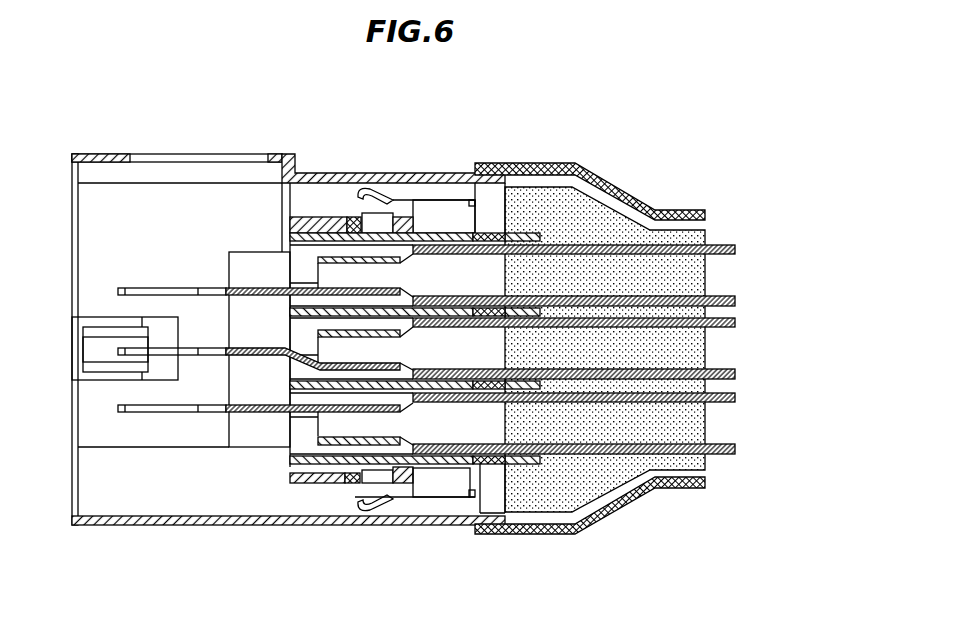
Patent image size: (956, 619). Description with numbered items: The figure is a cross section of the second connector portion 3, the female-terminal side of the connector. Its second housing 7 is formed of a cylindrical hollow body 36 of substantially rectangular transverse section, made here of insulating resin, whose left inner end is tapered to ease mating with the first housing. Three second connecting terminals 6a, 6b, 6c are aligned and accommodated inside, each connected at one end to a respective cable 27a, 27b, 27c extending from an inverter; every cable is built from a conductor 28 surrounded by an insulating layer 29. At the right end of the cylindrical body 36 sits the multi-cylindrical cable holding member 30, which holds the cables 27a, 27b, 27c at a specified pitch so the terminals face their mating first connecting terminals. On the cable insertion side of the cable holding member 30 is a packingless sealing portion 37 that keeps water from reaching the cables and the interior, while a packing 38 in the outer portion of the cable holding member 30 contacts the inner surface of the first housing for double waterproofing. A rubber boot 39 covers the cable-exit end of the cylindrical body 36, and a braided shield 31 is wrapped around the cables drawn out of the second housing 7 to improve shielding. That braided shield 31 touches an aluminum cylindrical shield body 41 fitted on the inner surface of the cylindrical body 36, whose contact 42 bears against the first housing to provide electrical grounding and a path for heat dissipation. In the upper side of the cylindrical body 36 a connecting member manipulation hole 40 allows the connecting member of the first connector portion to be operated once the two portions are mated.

The second connector portion 3 is at (86, 118).
The second housing 7 is at (110, 527).
The connecting member manipulation hole 40 is at (133, 157).
The cylindrical hollow body 36 is at (312, 175).
The contact 42 is at (358, 196).
The packing 38 is at (347, 484).
The cylindrical shield body 41 is at (430, 506).
The cable holding member 30 is at (482, 533).
The packingless sealing portion 37 is at (497, 230).
The rubber boot 39 is at (540, 163).
The braided shield 31 is at (602, 213).
The cable 27a is at (738, 255).
The cable 27b is at (738, 328).
The cable 27c is at (738, 403).
The conductor 28 is at (735, 276).
The insulating layer 29 is at (736, 300).
The second connecting terminal 6a is at (118, 291).
The second connecting terminal 6b is at (118, 351).
The second connecting terminal 6c is at (118, 408).